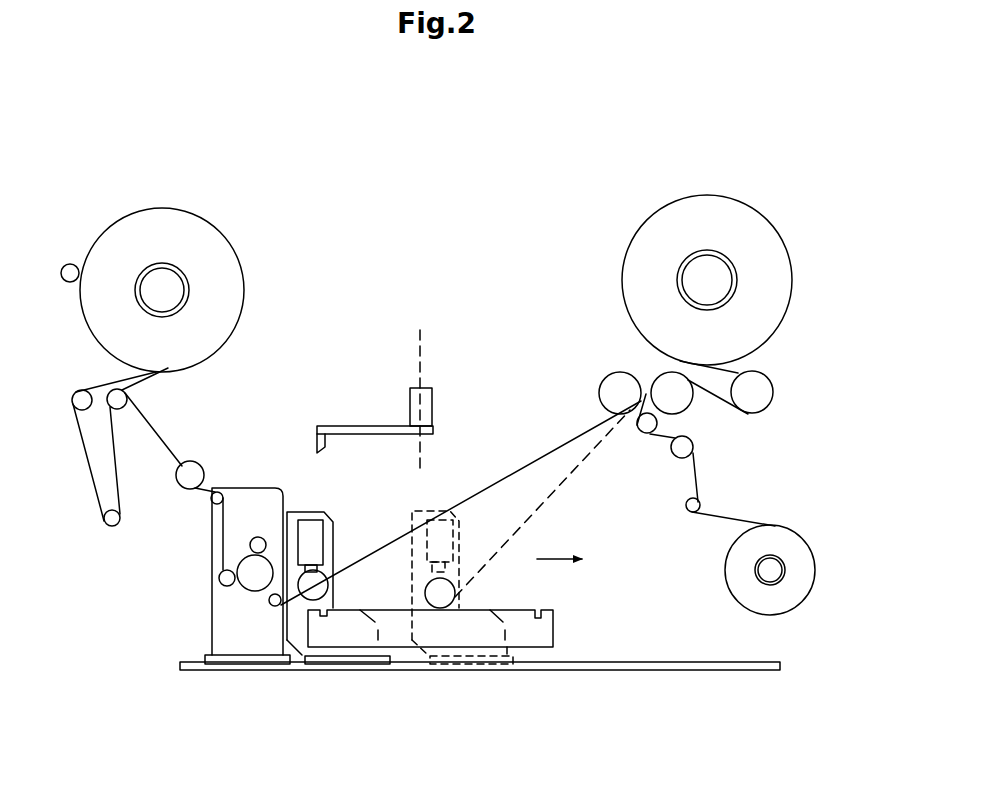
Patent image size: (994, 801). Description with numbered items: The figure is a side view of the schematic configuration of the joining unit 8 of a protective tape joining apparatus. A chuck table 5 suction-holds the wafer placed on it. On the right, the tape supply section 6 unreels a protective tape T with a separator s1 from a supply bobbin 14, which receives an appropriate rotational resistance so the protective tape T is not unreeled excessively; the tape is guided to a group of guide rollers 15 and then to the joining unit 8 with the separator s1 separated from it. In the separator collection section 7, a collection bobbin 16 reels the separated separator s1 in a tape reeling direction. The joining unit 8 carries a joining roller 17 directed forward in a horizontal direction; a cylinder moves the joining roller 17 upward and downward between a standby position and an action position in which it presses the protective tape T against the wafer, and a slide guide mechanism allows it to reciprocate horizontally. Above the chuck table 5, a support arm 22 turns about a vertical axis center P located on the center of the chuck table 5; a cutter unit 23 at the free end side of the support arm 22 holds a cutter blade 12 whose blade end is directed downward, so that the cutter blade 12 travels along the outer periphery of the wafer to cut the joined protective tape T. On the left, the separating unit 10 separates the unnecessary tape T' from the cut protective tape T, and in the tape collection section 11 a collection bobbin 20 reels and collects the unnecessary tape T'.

The chuck table 5 is at (553, 622).
The tape supply section 6 is at (805, 242).
The separator collection section 7 is at (830, 572).
The joining unit 8 is at (323, 512).
The separating unit 10 is at (237, 488).
The tape collection section 11 is at (118, 200).
The cutter blade 12 is at (318, 447).
The supply bobbin 14 is at (720, 287).
The guide rollers 15 is at (690, 408).
The collection bobbin 16 is at (778, 560).
The joining roller 17 is at (322, 577).
The collection bobbin 20 is at (185, 285).
The support arm 22 is at (343, 426).
The cutter unit 23 is at (398, 392).
The vertical axis center P is at (419, 388).
The protective tape T is at (461, 503).
The unnecessary tape T' is at (124, 457).
The separator s1 is at (727, 515).